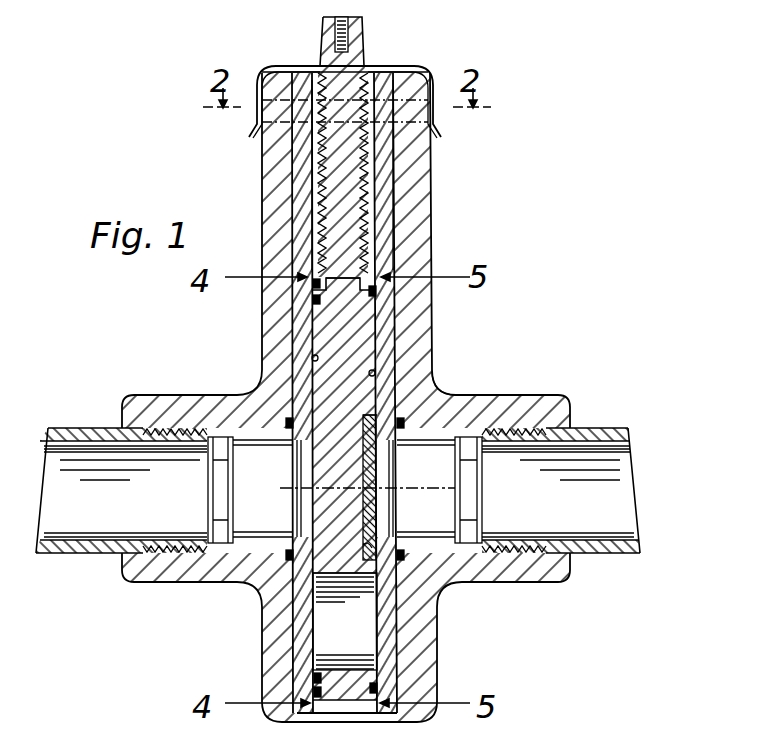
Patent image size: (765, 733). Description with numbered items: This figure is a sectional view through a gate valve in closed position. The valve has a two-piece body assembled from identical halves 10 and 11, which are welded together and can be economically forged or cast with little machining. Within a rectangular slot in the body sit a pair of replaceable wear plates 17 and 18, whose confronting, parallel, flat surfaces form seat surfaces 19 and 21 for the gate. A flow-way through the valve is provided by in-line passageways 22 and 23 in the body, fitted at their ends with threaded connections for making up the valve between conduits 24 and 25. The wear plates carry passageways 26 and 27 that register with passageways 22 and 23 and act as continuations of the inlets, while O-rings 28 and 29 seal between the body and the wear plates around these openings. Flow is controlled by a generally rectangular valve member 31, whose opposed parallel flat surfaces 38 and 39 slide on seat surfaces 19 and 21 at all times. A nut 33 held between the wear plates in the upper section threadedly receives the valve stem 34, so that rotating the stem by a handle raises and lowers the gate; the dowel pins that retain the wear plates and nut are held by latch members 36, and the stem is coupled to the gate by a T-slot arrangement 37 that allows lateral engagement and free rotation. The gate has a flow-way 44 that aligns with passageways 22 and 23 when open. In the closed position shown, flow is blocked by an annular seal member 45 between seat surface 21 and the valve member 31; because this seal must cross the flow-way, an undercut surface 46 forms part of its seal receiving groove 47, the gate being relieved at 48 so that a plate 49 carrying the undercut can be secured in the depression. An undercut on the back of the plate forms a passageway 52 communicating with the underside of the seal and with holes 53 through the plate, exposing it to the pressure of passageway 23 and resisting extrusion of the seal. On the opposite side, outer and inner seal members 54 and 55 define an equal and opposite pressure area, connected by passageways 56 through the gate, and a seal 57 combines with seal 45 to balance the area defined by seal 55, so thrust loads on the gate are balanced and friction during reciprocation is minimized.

The body half 10 is at (445, 385).
The body half 11 is at (252, 392).
The wear plate 17 is at (405, 350).
The wear plate 18 is at (305, 343).
The seat surface 19 is at (311, 358).
The seat surface 21 is at (376, 372).
The passageway 22 is at (263, 537).
The passageway 23 is at (407, 545).
The conduit 24 is at (603, 553).
The conduit 25 is at (63, 557).
The passageway 26 is at (297, 450).
The passageway 27 is at (384, 472).
The O-ring 28 is at (235, 452).
The O-ring 29 is at (470, 455).
The valve member 31 is at (362, 318).
The nut 33 is at (398, 150).
The valve stem 34 is at (343, 188).
The latch member 36 is at (418, 67).
The T-slot arrangement 37 is at (380, 265).
The flat surface 38 is at (307, 326).
The flat surface 39 is at (400, 330).
The flow-way 44 is at (352, 667).
The seal member 45 is at (405, 428).
The undercut surface 46 is at (360, 549).
The seal receiving groove 47 is at (370, 560).
The relief 48 is at (368, 503).
The plate 49 is at (362, 456).
The passageway 52 is at (364, 418).
The hole 53 is at (382, 440).
The outer seal member 54 is at (313, 284).
The inner seal member 55 is at (313, 300).
The passageway 56 is at (280, 488).
The seal 57 is at (378, 291).